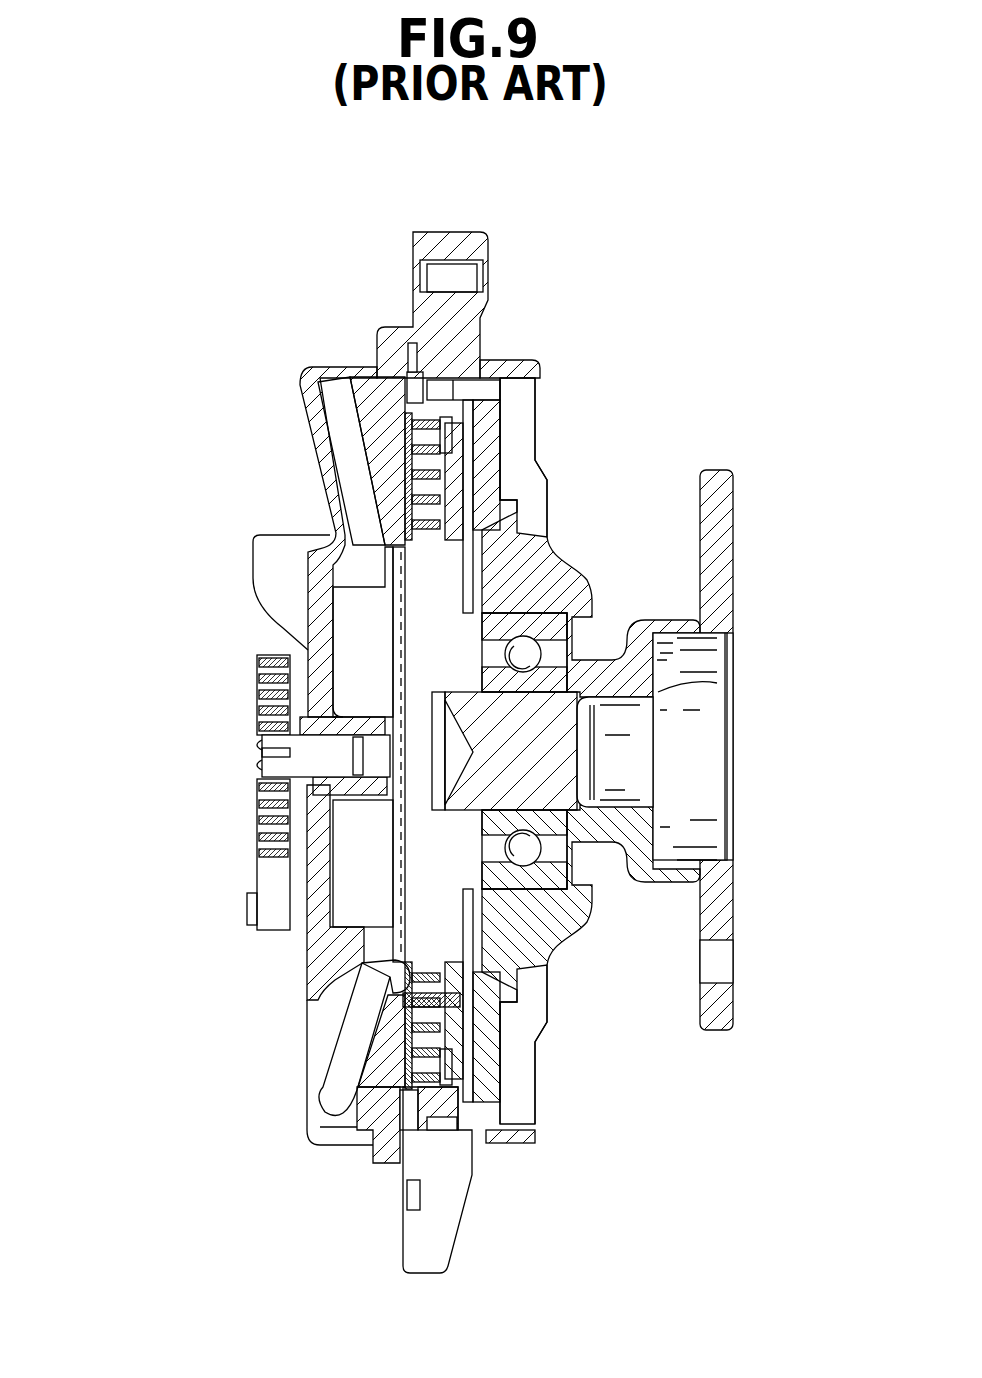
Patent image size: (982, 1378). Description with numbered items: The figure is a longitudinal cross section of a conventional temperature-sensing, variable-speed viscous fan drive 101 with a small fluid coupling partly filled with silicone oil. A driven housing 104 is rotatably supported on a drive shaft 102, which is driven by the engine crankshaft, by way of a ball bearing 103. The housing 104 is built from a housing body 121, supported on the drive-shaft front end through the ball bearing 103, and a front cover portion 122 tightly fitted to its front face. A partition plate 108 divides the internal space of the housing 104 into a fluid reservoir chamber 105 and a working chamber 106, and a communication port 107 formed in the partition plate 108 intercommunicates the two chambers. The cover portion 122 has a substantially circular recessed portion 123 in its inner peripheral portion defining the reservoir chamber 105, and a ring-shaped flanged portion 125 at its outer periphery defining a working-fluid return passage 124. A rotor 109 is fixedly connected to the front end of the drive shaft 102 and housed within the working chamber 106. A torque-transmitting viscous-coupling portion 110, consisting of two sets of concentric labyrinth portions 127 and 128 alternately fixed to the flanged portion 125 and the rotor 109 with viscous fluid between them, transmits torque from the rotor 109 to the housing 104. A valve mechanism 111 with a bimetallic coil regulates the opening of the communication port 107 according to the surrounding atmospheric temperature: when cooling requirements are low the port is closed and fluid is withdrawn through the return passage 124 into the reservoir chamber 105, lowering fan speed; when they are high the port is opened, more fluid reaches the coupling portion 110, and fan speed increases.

The fan drive 101 is at (258, 398).
The drive shaft 102 is at (650, 688).
The ball bearing 103 is at (625, 608).
The housing 104 is at (195, 228).
The fluid reservoir chamber 105 is at (557, 562).
The working chamber 106 is at (377, 667).
The communication port 107 is at (423, 620).
The partition plate 108 is at (420, 563).
The rotor 109 is at (445, 515).
The viscous-coupling portion 110 is at (505, 356).
The valve mechanism 111 is at (224, 670).
The housing body 121 is at (423, 320).
The front cover portion 122 is at (343, 376).
The recessed portion 123 is at (335, 878).
The working-fluid return passage 124 is at (370, 1078).
The flanged portion 125 is at (305, 1137).
The labyrinth portion 127 is at (433, 1040).
The labyrinth portion 128 is at (447, 1045).